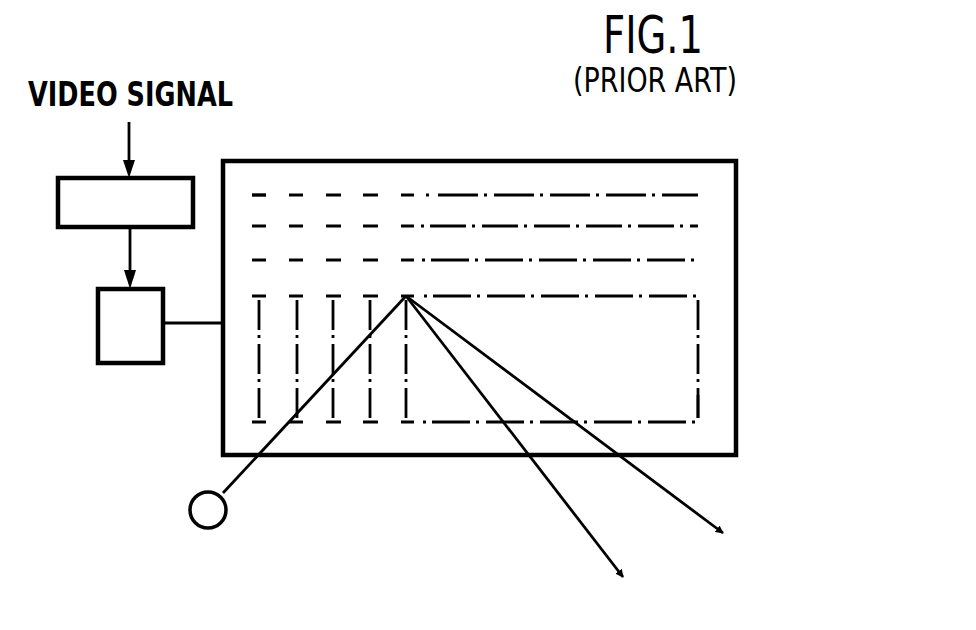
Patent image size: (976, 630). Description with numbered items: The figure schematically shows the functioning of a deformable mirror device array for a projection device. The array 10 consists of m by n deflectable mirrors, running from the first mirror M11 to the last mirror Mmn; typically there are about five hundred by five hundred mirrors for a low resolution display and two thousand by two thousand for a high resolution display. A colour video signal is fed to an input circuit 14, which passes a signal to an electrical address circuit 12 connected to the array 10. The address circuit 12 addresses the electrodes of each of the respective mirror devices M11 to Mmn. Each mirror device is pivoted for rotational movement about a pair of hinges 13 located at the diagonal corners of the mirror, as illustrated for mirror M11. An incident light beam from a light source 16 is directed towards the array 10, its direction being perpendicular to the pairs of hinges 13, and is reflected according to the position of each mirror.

The array 10 is at (412, 153).
The electrical address circuit 12 is at (145, 338).
The hinges 13 is at (281, 224).
The input circuit 14 is at (85, 229).
The light source 16 is at (201, 507).
The deflectable mirror M11 is at (240, 197).
The deflectable mirror Mmn is at (698, 427).